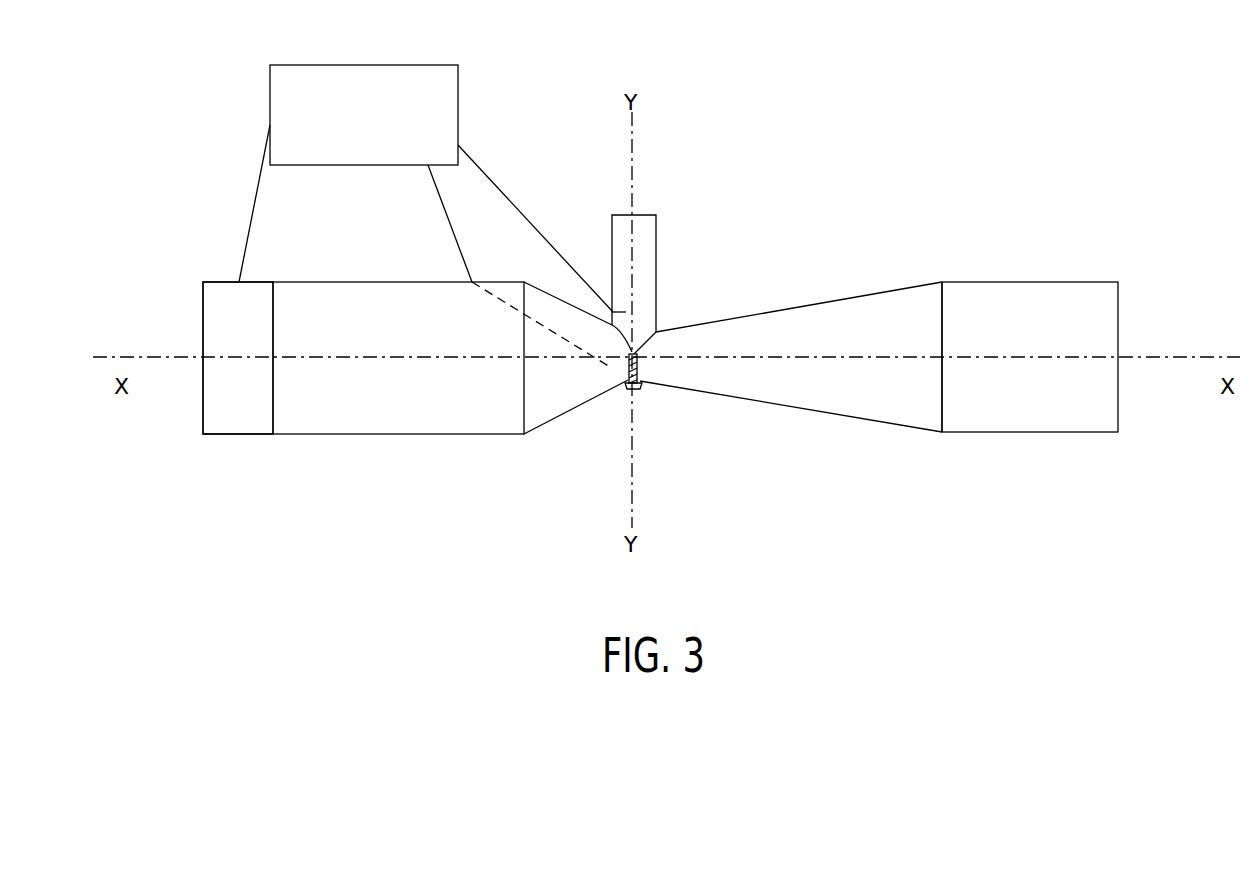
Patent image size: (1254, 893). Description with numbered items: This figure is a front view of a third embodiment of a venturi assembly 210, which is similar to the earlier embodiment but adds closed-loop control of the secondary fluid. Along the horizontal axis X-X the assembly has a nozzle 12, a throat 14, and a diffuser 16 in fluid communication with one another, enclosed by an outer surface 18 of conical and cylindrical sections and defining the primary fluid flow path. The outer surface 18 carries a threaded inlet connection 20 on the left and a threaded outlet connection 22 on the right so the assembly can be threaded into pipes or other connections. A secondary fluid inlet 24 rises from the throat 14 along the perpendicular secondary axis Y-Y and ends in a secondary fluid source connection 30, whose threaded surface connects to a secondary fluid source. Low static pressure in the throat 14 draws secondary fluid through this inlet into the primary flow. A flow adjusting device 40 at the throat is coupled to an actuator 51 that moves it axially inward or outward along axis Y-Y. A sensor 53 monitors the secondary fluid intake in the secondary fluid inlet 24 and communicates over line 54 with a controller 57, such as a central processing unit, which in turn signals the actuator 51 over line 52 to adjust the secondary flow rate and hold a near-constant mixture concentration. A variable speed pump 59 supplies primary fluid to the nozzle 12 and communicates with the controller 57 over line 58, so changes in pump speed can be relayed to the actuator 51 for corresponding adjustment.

The nozzle 12 is at (392, 303).
The throat 14 is at (628, 378).
The diffuser 16 is at (860, 325).
The outer surface 18 is at (799, 302).
The threaded inlet connection 20 is at (273, 434).
The threaded outlet connection 22 is at (1122, 308).
The secondary fluid inlet 24 is at (656, 270).
The secondary fluid source connection 30 is at (643, 215).
The flow adjusting device 40 is at (640, 368).
The actuator 51 is at (635, 389).
The line 52 is at (452, 228).
The sensor 53 is at (629, 305).
The line 54 is at (541, 228).
The controller 57 is at (360, 78).
The line 58 is at (252, 203).
The variable speed pump 59 is at (218, 292).
The venturi assembly 210 is at (803, 200).